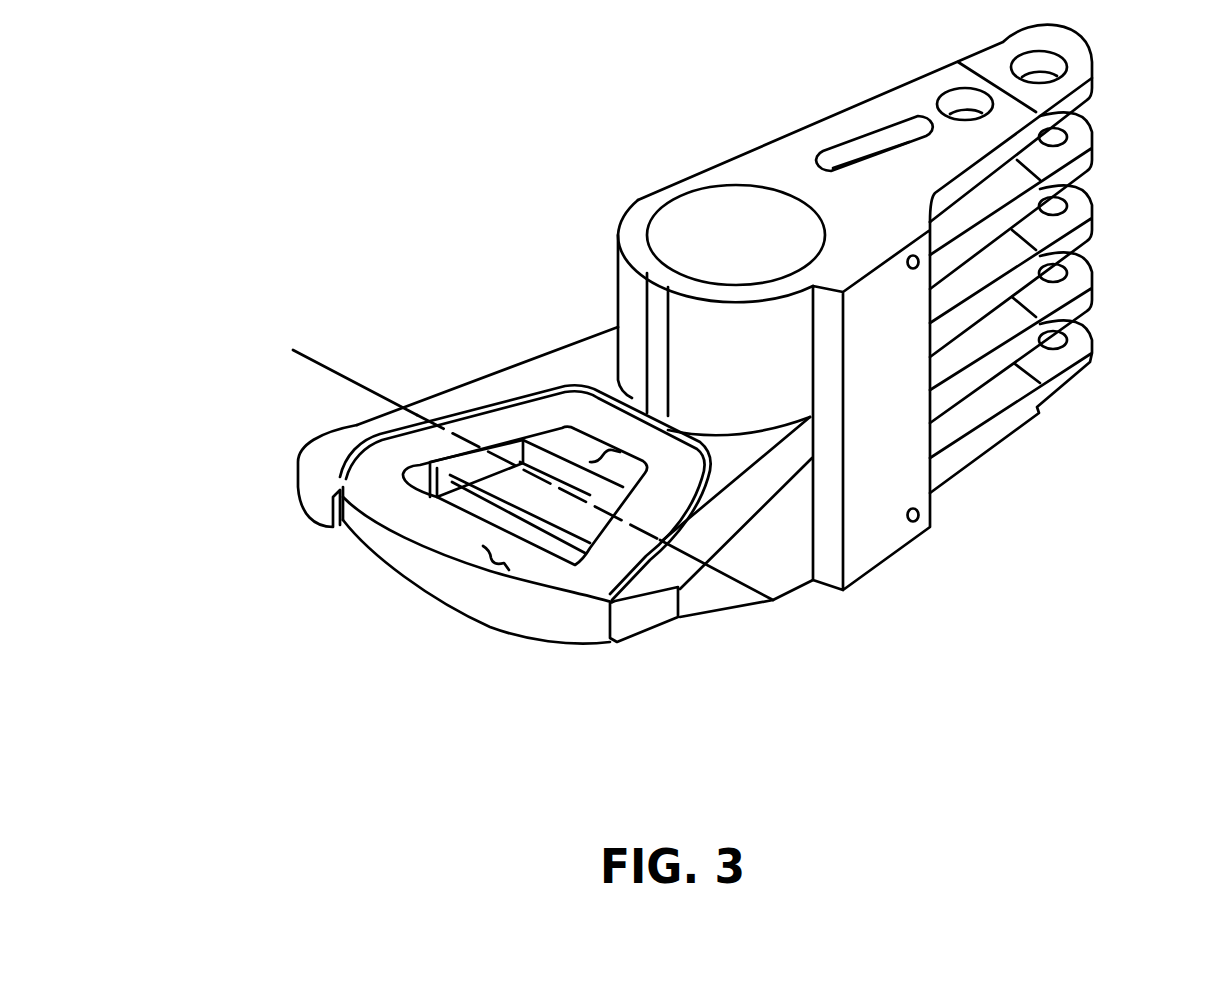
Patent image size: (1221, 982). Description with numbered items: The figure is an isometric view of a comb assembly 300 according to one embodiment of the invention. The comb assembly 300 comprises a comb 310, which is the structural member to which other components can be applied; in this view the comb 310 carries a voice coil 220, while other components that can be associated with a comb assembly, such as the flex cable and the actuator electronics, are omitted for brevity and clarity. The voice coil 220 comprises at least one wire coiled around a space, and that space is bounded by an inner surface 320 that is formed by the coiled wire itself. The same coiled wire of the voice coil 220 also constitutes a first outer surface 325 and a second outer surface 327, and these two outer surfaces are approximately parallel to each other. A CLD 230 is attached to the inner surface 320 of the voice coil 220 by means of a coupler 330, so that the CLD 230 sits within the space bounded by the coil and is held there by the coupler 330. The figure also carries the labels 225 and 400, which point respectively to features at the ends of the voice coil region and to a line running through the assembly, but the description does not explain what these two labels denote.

The comb assembly 300 is at (677, 379).
The comb 310 is at (742, 165).
The voice coil 220 is at (453, 490).
The tabs 225 is at (313, 505).
The CLD 230 is at (510, 487).
The inner surface 320 is at (597, 455).
The first outer surface 325 is at (492, 566).
The second outer surface 327 is at (492, 630).
The coupler 330 is at (430, 489).
The longitudinal axis 400 is at (657, 673).